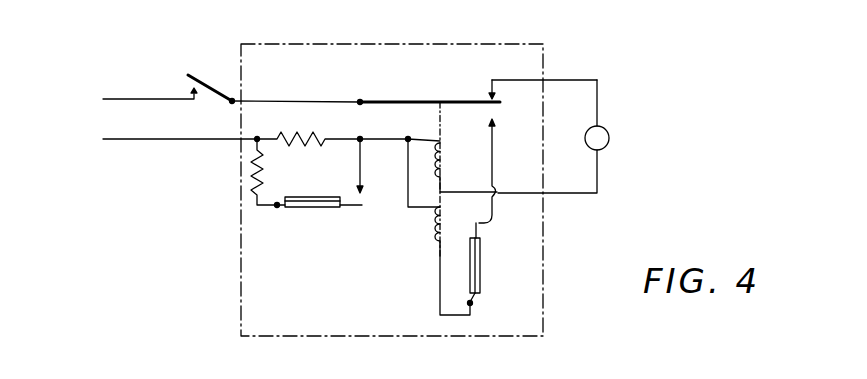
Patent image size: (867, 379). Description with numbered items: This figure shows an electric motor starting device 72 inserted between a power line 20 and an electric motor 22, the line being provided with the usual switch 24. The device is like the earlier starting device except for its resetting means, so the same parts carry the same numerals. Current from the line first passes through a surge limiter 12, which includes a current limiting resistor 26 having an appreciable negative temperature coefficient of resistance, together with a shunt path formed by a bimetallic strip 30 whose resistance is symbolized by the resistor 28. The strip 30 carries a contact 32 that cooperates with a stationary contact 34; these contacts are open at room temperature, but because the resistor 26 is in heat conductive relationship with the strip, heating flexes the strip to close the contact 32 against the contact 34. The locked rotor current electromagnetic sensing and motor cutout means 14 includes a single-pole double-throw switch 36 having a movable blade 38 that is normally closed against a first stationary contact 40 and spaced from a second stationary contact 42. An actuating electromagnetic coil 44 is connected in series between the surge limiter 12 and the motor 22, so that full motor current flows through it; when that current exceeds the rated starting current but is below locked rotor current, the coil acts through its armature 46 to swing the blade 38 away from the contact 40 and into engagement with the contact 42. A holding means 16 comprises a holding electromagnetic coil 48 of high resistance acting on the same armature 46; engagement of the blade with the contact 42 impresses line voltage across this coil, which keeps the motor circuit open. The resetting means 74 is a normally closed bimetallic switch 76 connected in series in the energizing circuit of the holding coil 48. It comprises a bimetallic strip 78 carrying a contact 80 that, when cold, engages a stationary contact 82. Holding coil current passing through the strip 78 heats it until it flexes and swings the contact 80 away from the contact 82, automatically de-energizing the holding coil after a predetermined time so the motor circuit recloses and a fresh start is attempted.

The surge limiter 12 is at (280, 222).
The locked rotor current electromagnetic sensing and motor cutout means 14 is at (424, 192).
The holding means 16 is at (430, 248).
The power line 20 is at (135, 120).
The electric motor 22 is at (611, 138).
The switch 24 is at (208, 85).
The current limiting resistor 26 is at (313, 148).
The resistor 28 is at (247, 182).
The bimetallic strip 30 is at (303, 197).
The contact 32 is at (356, 208).
The stationary contact 34 is at (365, 190).
The single-pole double-throw switch 36 is at (481, 92).
The movable blade 38 is at (388, 100).
The first stationary contact 40 is at (497, 99).
The second stationary contact 42 is at (495, 124).
The actuating electromagnetic coil 44 is at (445, 163).
The armature 46 is at (437, 118).
The holding electromagnetic coil 48 is at (445, 226).
The electric motor starting device 72 is at (550, 64).
The resetting means 74 is at (488, 259).
The bimetallic switch 76 is at (480, 297).
The bimetallic strip 78 is at (468, 283).
The contact 80 is at (468, 236).
The stationary contact 82 is at (482, 223).